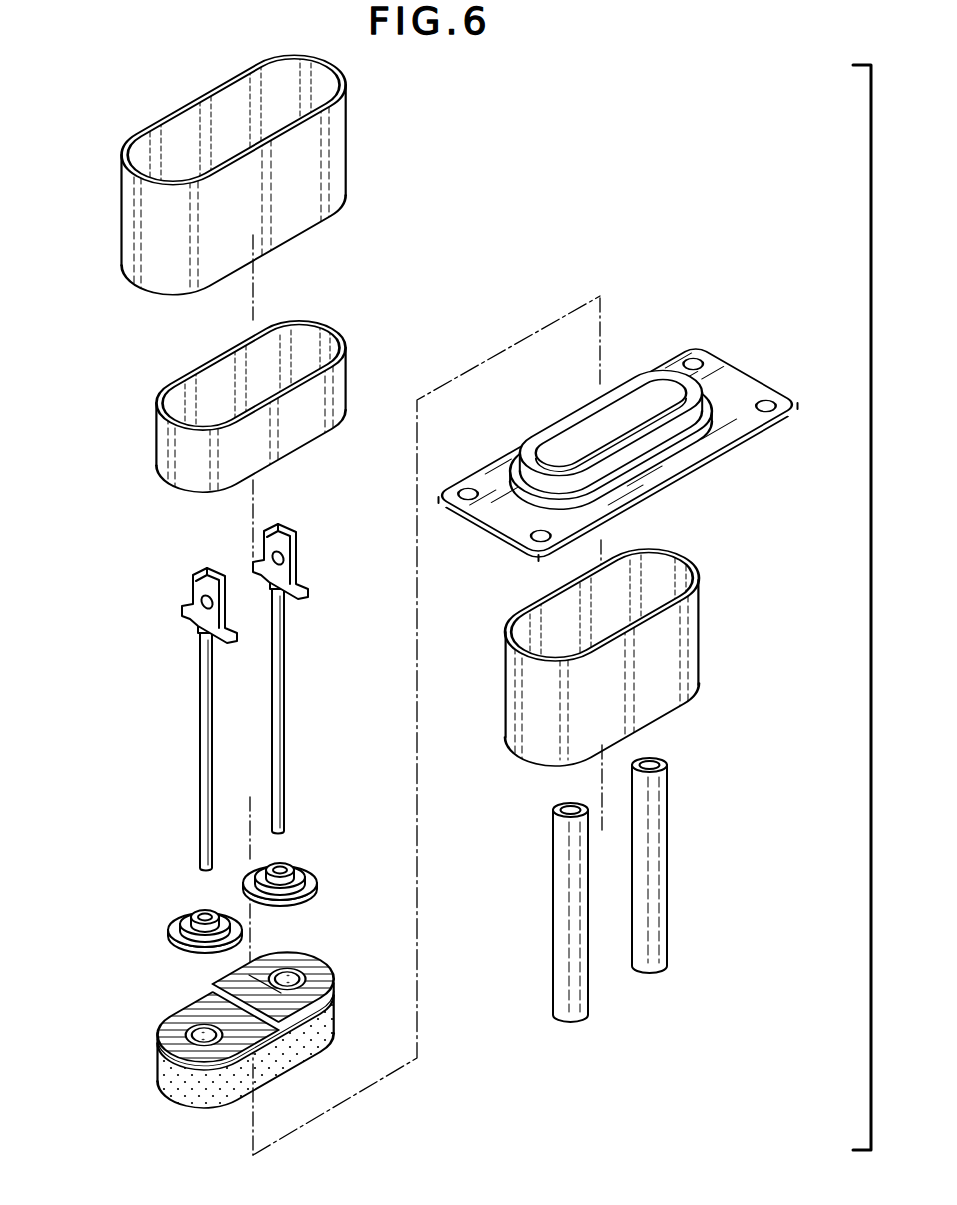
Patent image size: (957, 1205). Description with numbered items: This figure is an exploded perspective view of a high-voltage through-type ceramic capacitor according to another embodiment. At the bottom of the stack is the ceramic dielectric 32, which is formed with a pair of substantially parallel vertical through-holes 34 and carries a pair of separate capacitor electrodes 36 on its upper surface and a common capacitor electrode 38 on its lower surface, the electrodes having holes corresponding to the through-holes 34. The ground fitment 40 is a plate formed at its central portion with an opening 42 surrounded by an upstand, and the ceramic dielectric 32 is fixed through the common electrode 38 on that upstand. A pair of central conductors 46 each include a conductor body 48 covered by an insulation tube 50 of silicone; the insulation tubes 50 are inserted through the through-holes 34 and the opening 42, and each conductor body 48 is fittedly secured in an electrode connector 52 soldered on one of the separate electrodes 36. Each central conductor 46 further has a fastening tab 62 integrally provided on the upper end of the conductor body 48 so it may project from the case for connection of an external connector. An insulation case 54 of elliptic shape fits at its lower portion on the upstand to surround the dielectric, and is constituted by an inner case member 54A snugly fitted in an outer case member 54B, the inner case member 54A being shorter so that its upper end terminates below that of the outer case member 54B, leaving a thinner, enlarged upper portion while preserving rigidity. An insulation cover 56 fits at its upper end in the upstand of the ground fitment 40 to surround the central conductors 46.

The ceramic dielectric 32 is at (331, 1018).
The through-holes 34 is at (293, 972).
The capacitor electrodes 36 is at (319, 970).
The common capacitor electrode 38 is at (283, 1080).
The ground fitment 40 is at (679, 466).
The opening 42 is at (594, 432).
The central conductors 46 is at (303, 683).
The conductor body 48 is at (287, 760).
The insulation tube 50 is at (665, 836).
The electrode connector 52 is at (309, 870).
The insulation case 54 is at (112, 215).
The inner case member 54A is at (343, 386).
The outer case member 54B is at (345, 194).
The insulation cover 56 is at (699, 630).
The fastening tab 62 is at (301, 558).